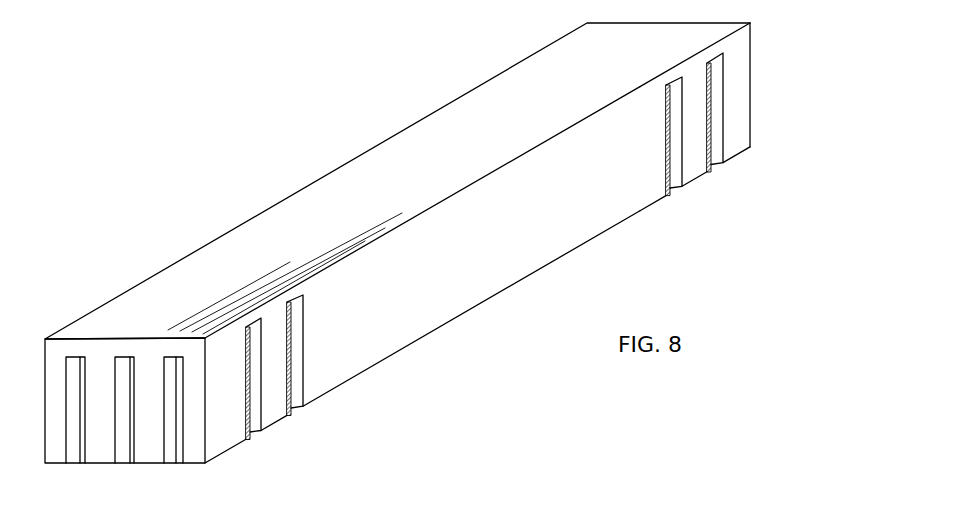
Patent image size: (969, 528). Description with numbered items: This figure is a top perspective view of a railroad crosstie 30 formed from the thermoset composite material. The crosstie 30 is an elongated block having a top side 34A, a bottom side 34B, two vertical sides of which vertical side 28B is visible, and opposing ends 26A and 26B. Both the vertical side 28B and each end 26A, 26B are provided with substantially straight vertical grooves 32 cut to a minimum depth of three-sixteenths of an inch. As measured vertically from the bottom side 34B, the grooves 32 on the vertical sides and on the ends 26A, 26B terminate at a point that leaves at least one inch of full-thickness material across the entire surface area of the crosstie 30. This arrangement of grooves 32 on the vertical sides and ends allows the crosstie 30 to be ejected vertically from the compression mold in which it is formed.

The railroad crosstie 30 is at (435, 266).
The end 26A is at (102, 447).
The end 26B is at (752, 83).
The vertical side 28B is at (690, 157).
The vertical grooves 32 is at (182, 410).
The top side 34A is at (205, 262).
The bottom side 34B is at (483, 302).